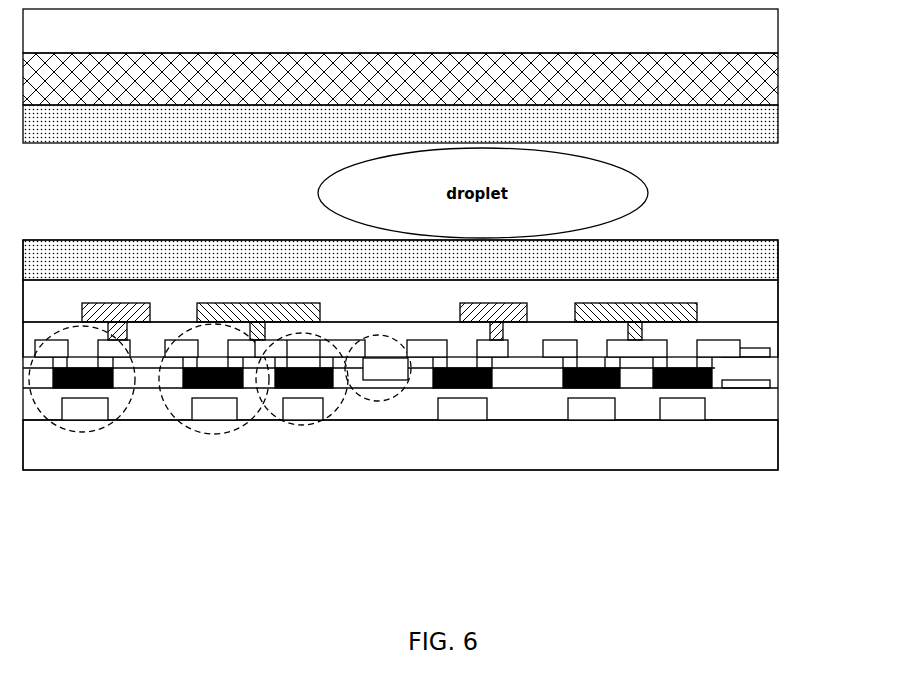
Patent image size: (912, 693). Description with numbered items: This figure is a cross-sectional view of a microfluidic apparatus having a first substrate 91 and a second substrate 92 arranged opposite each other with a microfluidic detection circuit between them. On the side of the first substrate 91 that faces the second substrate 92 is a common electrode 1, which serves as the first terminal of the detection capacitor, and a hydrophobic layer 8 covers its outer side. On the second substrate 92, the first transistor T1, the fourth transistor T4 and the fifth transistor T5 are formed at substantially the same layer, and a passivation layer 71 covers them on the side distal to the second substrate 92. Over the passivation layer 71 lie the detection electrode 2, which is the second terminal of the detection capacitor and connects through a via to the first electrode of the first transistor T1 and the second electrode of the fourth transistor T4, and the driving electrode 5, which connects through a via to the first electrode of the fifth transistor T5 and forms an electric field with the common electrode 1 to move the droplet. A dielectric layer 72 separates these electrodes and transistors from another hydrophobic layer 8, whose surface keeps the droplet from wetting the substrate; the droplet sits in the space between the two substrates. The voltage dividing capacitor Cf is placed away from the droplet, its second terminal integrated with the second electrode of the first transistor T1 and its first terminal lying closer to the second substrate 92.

The first substrate 91 is at (755, 33).
The common electrode 1 is at (762, 85).
The hydrophobic layer 8 is at (762, 127).
The dielectric layer 72 is at (762, 305).
The passivation layer 71 is at (765, 340).
The second substrate 92 is at (765, 447).
The driving electrode 5 is at (108, 338).
The detection electrode 2 is at (257, 335).
The fifth transistor T5 is at (80, 432).
The fourth transistor T4 is at (208, 432).
The first transistor T1 is at (320, 432).
The voltage dividing capacitor Cf is at (397, 418).